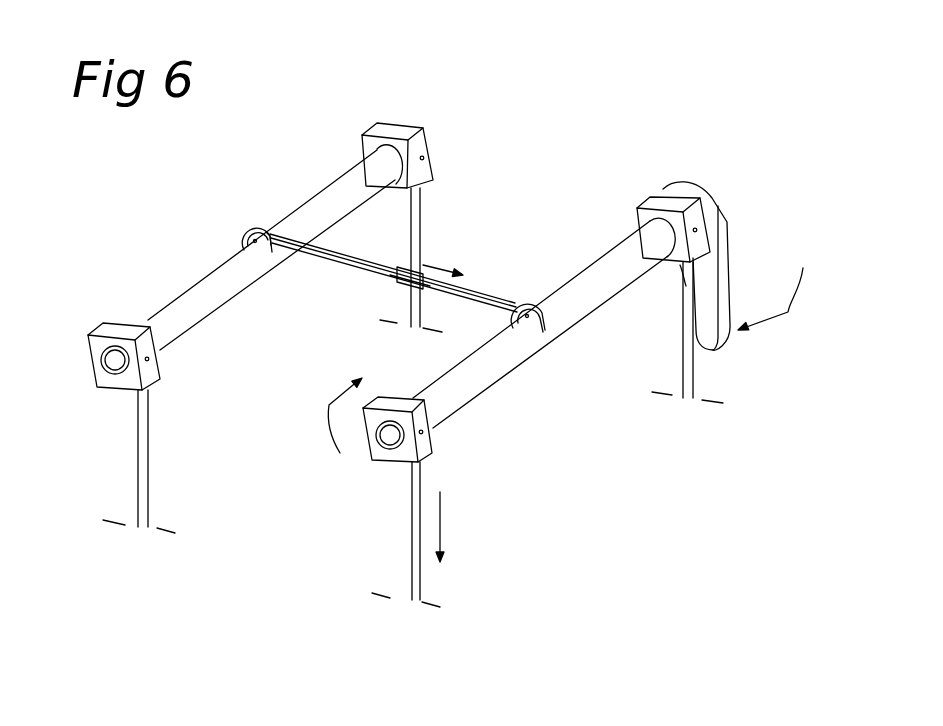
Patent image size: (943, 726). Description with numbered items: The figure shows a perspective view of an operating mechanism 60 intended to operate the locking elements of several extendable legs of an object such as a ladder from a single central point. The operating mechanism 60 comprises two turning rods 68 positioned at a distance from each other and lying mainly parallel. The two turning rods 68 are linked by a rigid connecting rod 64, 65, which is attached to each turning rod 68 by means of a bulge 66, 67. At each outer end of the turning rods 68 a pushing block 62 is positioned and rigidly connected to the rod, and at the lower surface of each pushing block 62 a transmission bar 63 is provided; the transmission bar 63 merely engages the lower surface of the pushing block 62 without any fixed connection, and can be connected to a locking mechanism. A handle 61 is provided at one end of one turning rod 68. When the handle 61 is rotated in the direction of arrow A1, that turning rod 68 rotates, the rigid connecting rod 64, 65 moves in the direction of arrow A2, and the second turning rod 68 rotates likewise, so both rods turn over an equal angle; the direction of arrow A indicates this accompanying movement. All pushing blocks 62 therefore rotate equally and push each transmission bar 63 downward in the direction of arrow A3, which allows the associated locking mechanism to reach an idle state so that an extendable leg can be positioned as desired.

The operating mechanism 60 is at (615, 467).
The handle 61 is at (717, 262).
The pushing block 62 is at (378, 133).
The transmission bar 63 is at (140, 460).
The connecting rod 64 is at (340, 255).
The connecting rod 65 is at (476, 300).
The bulge 66 is at (530, 300).
The bulge 67 is at (242, 236).
The turning rod 68 is at (203, 293).
The arrow A is at (328, 418).
The arrow A1 is at (788, 312).
The arrow A2 is at (437, 268).
The arrow A3 is at (441, 530).